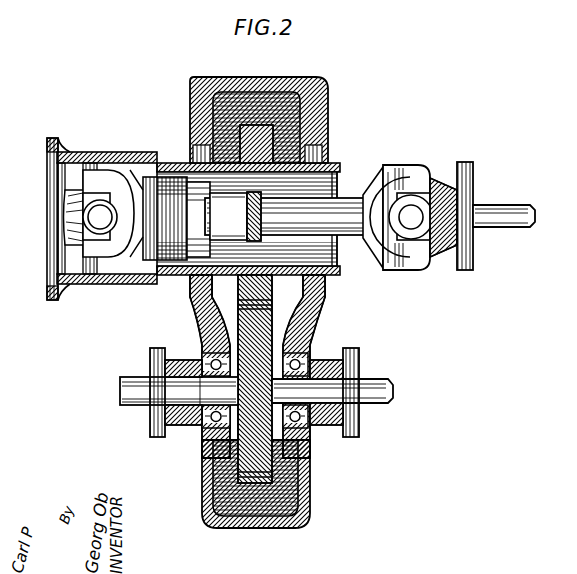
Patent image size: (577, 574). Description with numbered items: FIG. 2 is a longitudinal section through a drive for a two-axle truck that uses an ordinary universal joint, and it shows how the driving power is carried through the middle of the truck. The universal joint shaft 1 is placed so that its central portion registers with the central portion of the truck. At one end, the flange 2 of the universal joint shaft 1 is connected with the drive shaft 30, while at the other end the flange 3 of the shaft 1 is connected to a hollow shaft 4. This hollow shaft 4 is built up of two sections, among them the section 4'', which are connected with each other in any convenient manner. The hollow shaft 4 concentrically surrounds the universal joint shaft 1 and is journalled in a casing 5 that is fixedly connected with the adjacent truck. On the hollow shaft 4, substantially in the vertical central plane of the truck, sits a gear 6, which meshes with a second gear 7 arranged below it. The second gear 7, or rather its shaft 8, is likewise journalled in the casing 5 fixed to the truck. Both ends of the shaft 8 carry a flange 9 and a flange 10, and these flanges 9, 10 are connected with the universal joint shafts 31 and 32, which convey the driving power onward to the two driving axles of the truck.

The universal joint shaft 1 is at (345, 237).
The flange 2 is at (428, 180).
The flange 3 is at (50, 199).
The hollow shaft 4 is at (193, 226).
The section 4'' is at (170, 236).
The casing 5 is at (328, 101).
The gear 6 is at (274, 143).
The second gear 7 is at (298, 438).
The shaft 8 is at (202, 366).
The flange 9 is at (172, 425).
The flange 10 is at (328, 361).
The drive shaft 30 is at (505, 208).
The universal joint shaft 31 is at (137, 378).
The universal joint shaft 32 is at (372, 404).